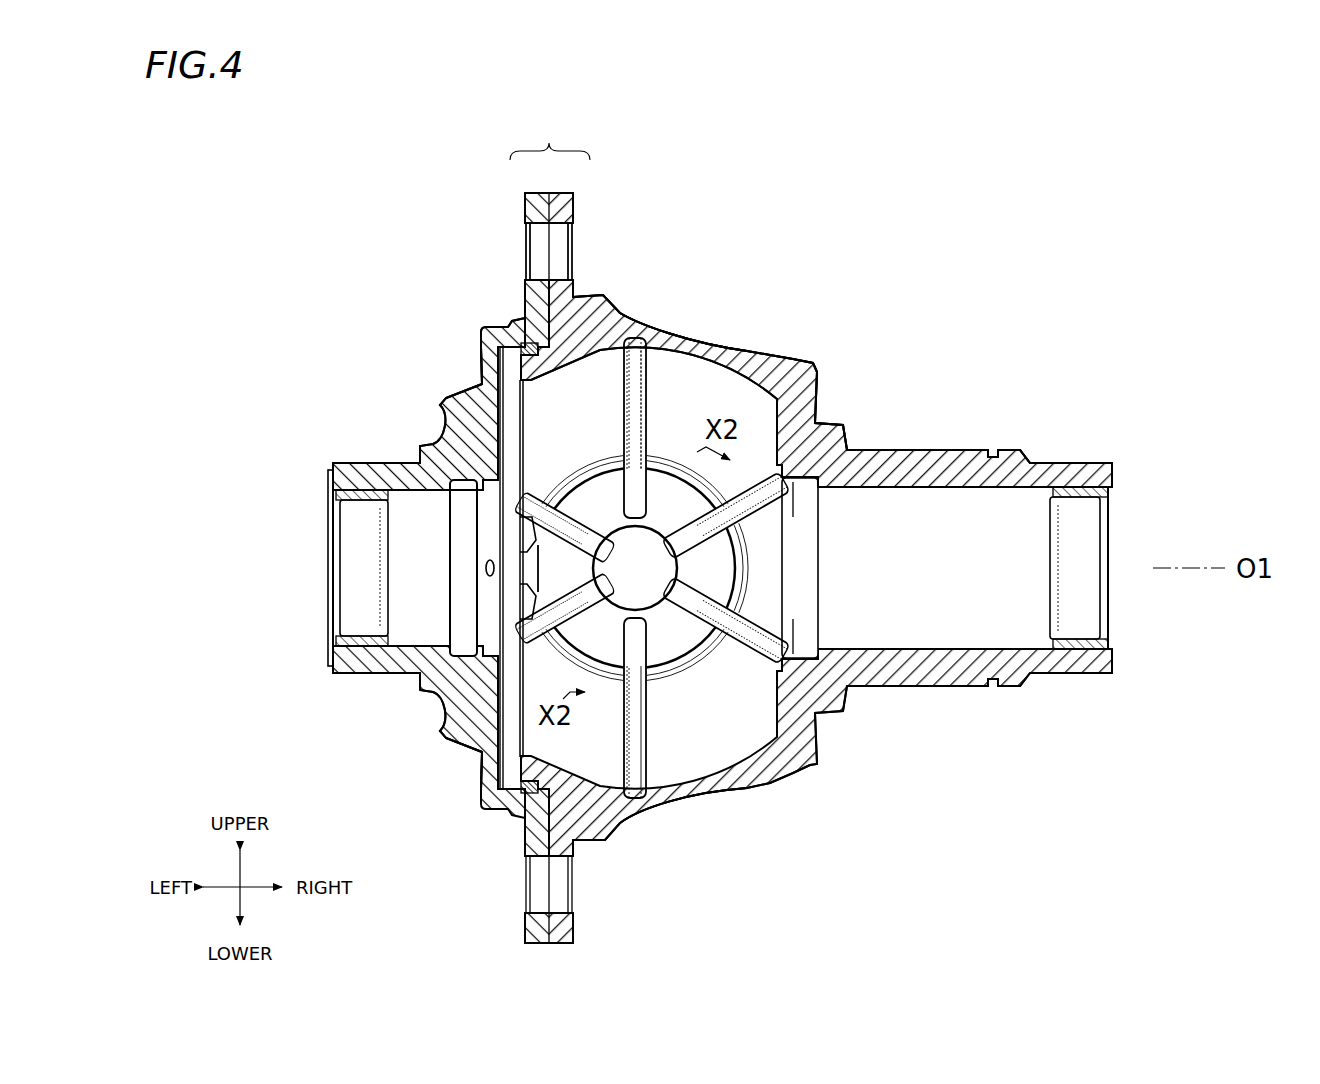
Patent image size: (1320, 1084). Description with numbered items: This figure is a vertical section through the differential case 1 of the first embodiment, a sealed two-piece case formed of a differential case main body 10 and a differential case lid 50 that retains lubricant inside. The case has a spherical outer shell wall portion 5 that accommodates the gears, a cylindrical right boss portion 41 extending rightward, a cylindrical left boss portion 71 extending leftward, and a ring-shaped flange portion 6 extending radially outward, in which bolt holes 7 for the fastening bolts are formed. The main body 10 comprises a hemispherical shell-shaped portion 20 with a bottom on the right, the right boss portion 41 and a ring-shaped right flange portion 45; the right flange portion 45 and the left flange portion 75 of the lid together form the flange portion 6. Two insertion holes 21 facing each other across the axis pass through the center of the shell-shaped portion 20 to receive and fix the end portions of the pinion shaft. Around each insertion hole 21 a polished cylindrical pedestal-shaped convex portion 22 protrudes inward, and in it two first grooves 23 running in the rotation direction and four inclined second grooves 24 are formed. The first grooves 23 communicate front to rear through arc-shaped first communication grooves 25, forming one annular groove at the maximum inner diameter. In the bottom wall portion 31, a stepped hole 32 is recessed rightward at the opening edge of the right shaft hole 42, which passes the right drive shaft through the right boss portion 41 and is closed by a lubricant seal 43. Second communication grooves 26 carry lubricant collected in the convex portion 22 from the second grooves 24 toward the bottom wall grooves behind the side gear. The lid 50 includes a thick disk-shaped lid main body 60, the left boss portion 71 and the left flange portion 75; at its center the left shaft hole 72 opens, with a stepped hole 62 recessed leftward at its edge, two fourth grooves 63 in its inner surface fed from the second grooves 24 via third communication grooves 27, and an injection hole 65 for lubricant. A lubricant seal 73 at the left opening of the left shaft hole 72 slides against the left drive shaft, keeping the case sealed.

The differential case 1 is at (367, 198).
The outer shell wall portion 5 is at (680, 318).
The flange portion 6 is at (550, 135).
The bolt holes 7 is at (540, 250).
The differential case main body 10 is at (808, 360).
The hemispherical shell-shaped portion 20 is at (735, 350).
The insertion hole 21 is at (621, 584).
The convex portion 22 is at (680, 636).
The first grooves 23 is at (625, 497).
The second grooves 24 is at (572, 528).
The first communication grooves 25 is at (636, 381).
The second communication grooves 26 is at (745, 500).
The third communication grooves 27 is at (548, 540).
The bottom wall portion 31 is at (812, 425).
The stepped hole 32 is at (808, 505).
The right boss portion 41 is at (937, 690).
The right shaft hole 42 is at (1000, 633).
The lubricant seal 43 is at (1075, 650).
The right flange portion 45 is at (558, 207).
The differential case lid 50 is at (420, 440).
The lid main body 60 is at (425, 742).
The stepped hole 62 is at (455, 508).
The fourth grooves 63 is at (440, 398).
The injection hole 65 is at (484, 568).
The left boss portion 71 is at (345, 462).
The left shaft hole 72 is at (410, 650).
The lubricant seal 73 is at (330, 640).
The left flange portion 75 is at (535, 207).